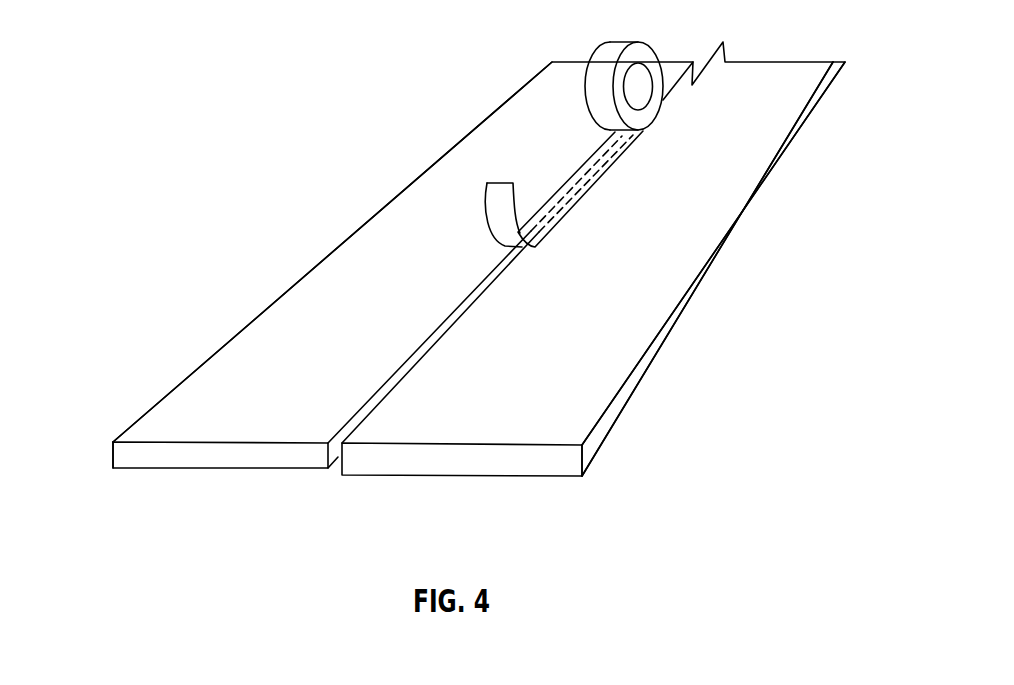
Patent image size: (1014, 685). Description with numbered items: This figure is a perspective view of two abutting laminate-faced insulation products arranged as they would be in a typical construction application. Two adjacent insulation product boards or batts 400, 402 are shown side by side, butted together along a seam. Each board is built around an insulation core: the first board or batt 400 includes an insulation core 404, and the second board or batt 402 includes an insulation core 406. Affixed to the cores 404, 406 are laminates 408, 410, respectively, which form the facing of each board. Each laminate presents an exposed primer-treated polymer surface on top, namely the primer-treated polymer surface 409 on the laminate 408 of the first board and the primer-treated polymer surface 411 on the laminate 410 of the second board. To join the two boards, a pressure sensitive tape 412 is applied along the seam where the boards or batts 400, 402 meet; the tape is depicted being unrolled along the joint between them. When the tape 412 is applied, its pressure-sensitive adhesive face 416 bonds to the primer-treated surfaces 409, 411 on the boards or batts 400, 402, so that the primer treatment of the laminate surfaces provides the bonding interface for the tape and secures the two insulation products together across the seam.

The insulation product board or batt 400 is at (282, 472).
The insulation product board or batt 402 is at (455, 475).
The insulation core 404 is at (115, 453).
The insulation core 406 is at (538, 468).
The laminate 408 is at (198, 390).
The primer-treated polymer surface 409 is at (343, 283).
The laminate 410 is at (620, 368).
The primer-treated polymer surface 411 is at (672, 238).
The pressure sensitive tape 412 is at (618, 145).
The pressure-sensitive adhesive face 416 is at (497, 207).